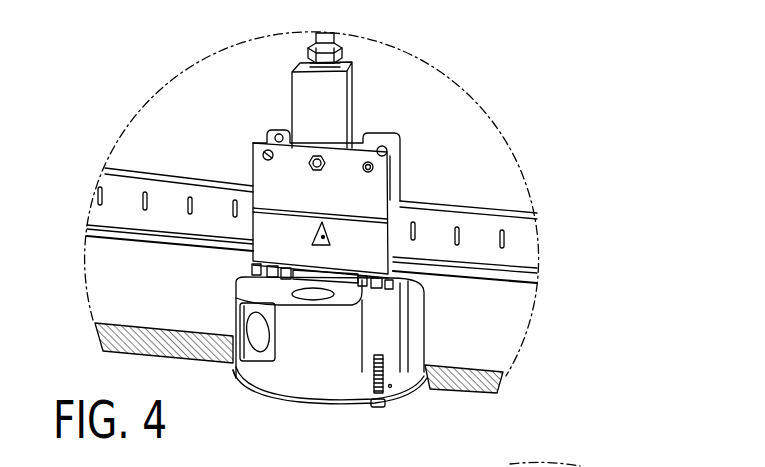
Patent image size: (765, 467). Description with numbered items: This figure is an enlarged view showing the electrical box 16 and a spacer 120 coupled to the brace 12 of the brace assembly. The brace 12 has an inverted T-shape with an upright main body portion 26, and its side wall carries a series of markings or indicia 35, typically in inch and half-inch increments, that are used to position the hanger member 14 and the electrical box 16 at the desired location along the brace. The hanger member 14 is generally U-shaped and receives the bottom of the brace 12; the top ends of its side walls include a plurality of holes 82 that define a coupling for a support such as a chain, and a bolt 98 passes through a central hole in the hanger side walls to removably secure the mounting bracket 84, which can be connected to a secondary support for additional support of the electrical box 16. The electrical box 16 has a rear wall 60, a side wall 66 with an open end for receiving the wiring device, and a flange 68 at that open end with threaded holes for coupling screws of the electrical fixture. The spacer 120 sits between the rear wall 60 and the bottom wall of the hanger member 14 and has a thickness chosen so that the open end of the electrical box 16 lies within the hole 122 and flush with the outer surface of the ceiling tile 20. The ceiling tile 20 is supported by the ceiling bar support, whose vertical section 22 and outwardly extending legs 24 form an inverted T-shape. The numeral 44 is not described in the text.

The brace 12 is at (318, 210).
The hanger member 14 is at (404, 148).
The electrical box 16 is at (370, 365).
The ceiling tile 20 is at (497, 392).
The vertical section 22 is at (130, 197).
The outwardly extending legs 24 is at (127, 243).
The main body portion 26 is at (150, 172).
The indicia 35 is at (514, 240).
The element 44 is at (590, 455).
The rear wall 60 is at (236, 296).
The side wall 66 is at (297, 383).
The flange 68 is at (352, 406).
The holes 82 is at (265, 153).
The mounting bracket 84 is at (362, 97).
The bolt 98 is at (315, 165).
The spacer 120 is at (236, 265).
The hole 122 is at (423, 378).